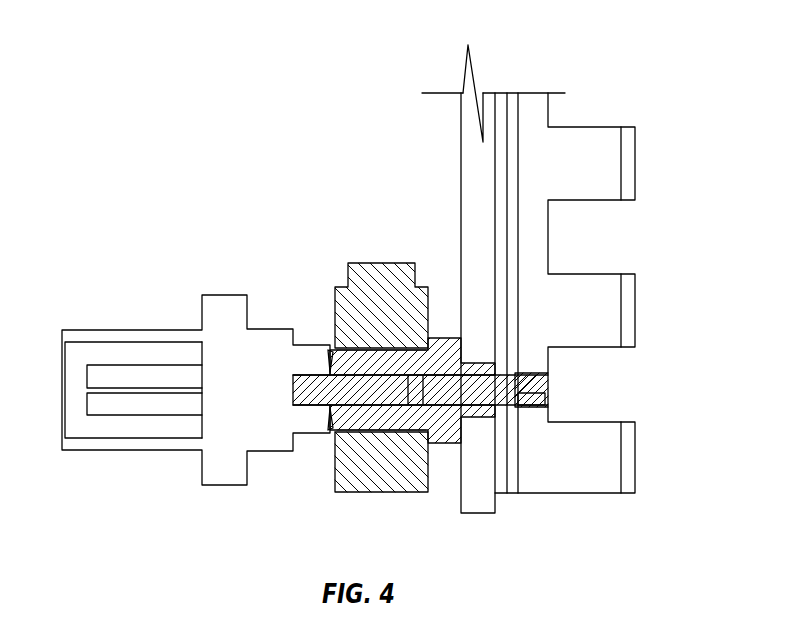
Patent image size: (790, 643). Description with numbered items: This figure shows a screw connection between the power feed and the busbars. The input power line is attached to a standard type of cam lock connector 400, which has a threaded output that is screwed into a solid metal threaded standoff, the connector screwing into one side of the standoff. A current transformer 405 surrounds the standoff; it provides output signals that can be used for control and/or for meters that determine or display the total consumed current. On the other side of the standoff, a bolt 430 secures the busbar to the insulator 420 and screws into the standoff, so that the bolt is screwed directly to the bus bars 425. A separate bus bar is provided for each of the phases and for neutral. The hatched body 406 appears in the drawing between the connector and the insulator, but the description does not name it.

The cam lock connector 400 is at (213, 486).
The current transformer 405 is at (355, 494).
The bushing body 406 is at (445, 338).
The insulator 420 is at (475, 162).
The bus bars 425 is at (613, 460).
The bolt 430 is at (548, 395).